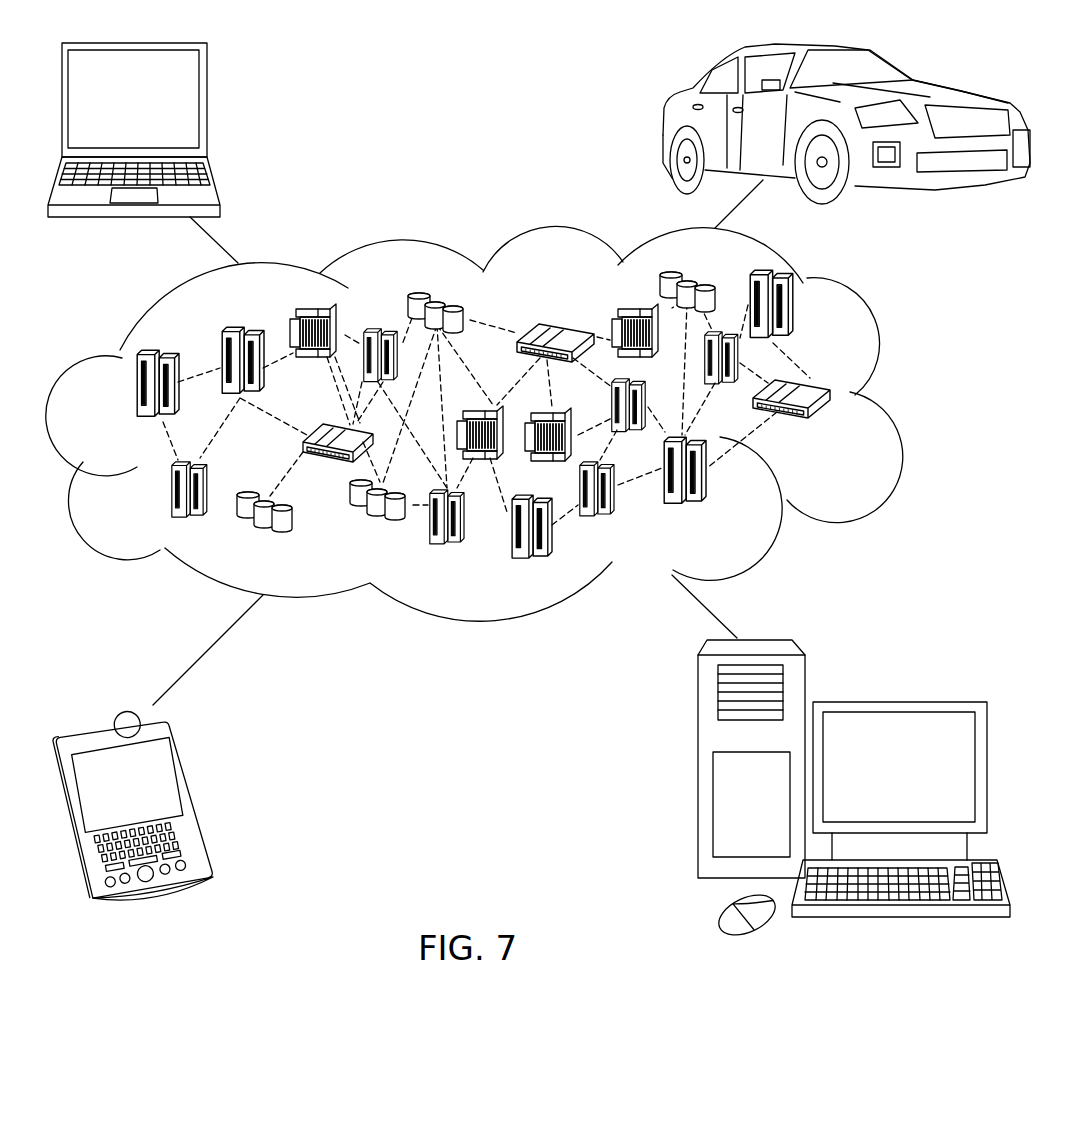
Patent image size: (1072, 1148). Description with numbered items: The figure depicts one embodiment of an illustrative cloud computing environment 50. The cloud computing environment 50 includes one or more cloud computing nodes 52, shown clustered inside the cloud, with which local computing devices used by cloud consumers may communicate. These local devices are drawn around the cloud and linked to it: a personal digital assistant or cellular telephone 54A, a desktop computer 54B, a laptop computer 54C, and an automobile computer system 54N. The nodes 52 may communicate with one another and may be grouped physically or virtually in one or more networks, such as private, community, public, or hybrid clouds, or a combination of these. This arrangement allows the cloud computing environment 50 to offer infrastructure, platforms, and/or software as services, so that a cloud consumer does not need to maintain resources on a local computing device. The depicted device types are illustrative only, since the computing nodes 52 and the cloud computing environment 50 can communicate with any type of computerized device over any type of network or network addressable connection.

The cloud computing environment 50 is at (897, 397).
The cloud computing nodes 52 is at (842, 429).
The personal digital assistant (PDA) or cellular telephone 54A is at (192, 797).
The desktop computer 54B is at (897, 700).
The laptop computer 54C is at (207, 108).
The automobile computer system 54N is at (665, 125).